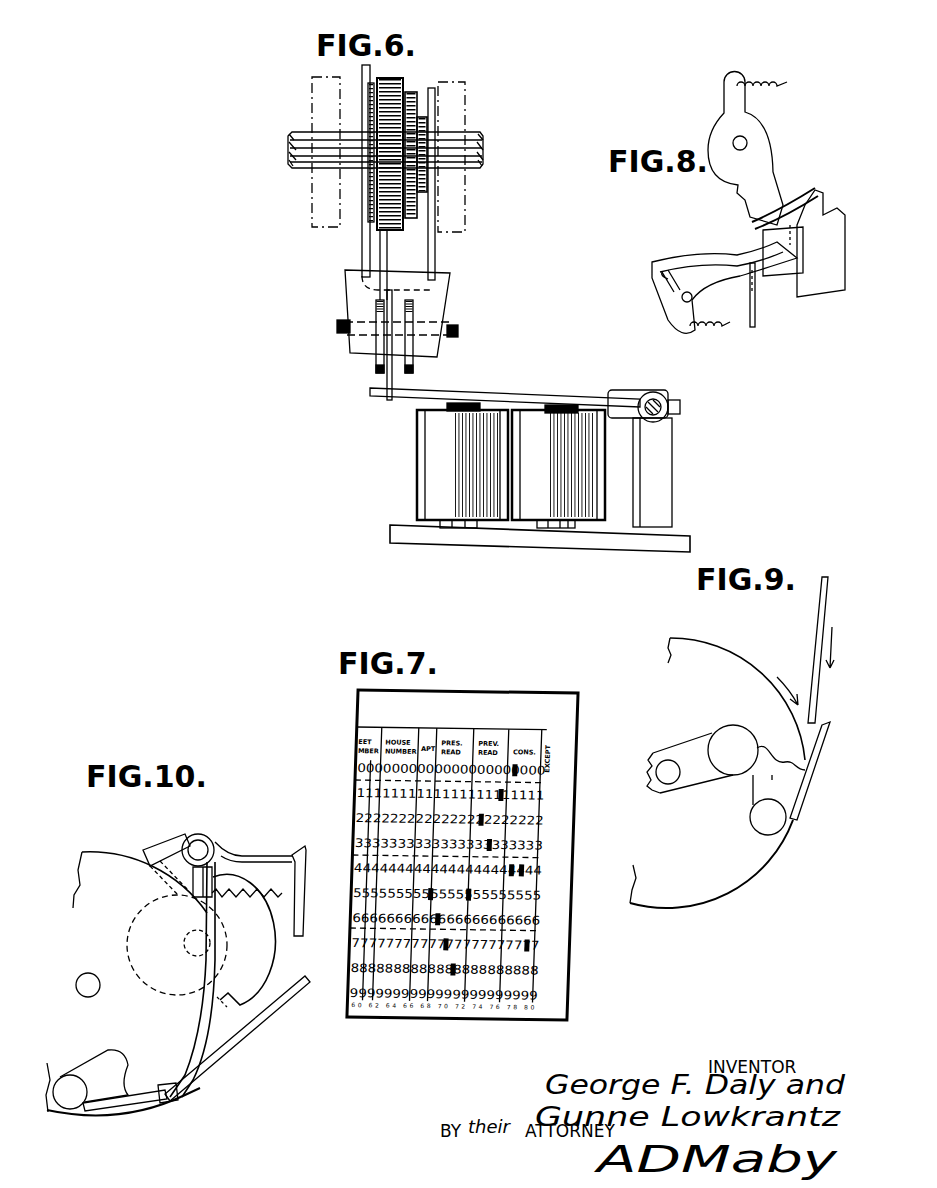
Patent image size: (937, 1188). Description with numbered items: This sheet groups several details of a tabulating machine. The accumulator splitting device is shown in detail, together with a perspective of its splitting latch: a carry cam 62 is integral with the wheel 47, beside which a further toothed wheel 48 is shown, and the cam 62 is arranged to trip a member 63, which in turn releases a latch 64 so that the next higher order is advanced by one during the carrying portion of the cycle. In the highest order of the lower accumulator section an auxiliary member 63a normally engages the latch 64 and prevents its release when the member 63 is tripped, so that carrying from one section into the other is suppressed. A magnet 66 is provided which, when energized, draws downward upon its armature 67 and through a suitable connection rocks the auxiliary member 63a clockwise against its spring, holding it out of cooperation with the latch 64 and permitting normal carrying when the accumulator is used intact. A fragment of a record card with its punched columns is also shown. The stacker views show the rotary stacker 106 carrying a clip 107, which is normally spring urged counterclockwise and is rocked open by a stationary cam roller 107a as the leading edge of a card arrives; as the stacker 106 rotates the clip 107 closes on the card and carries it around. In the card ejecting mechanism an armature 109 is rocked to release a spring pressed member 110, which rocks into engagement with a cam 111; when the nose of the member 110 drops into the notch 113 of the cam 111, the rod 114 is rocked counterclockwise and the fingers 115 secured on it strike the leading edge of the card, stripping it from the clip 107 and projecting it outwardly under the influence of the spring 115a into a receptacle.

In FIG. 6, the wheel 47 is at (397, 80).
In FIG. 6, the pinion gear 48 is at (415, 92).
In FIG. 6, the carry cam 62 is at (427, 127).
In FIG. 6, the latch 64 is at (362, 248).
In FIG. 8, the latch 64 is at (767, 178).
In FIG. 6, the member 63 is at (413, 366).
In FIG. 8, the member 63 is at (792, 290).
In FIG. 6, the auxiliary member 63a is at (376, 365).
In FIG. 8, the auxiliary member 63a is at (720, 260).
In FIG. 6, the armature 67 is at (498, 397).
In FIG. 6, the magnet 66 is at (435, 460).
In FIG. 9, the rotary stacker 106 is at (717, 761).
In FIG. 10, the rotary stacker 106 is at (66, 850).
In FIG. 9, the clip 107 is at (812, 760).
In FIG. 10, the clip 107 is at (140, 1112).
In FIG. 9, the stationary cam roller 107a is at (698, 740).
In FIG. 10, the armature 109 is at (305, 893).
In FIG. 10, the spring pressed member 110 is at (257, 857).
In FIG. 10, the cam 111 is at (263, 967).
In FIG. 10, the notch 113 is at (180, 847).
In FIG. 10, the rod 114 is at (203, 847).
In FIG. 10, the fingers 115 is at (200, 1037).
In FIG. 10, the spring 115a is at (244, 882).